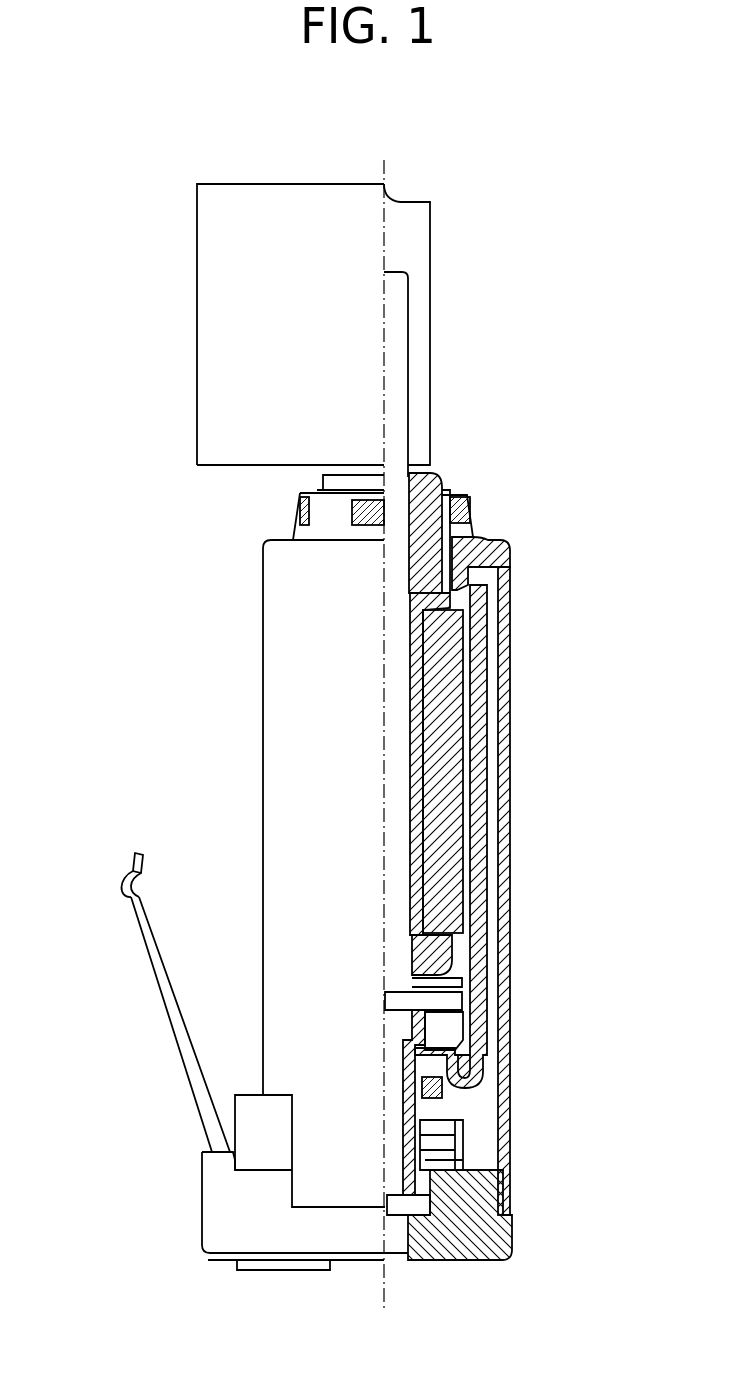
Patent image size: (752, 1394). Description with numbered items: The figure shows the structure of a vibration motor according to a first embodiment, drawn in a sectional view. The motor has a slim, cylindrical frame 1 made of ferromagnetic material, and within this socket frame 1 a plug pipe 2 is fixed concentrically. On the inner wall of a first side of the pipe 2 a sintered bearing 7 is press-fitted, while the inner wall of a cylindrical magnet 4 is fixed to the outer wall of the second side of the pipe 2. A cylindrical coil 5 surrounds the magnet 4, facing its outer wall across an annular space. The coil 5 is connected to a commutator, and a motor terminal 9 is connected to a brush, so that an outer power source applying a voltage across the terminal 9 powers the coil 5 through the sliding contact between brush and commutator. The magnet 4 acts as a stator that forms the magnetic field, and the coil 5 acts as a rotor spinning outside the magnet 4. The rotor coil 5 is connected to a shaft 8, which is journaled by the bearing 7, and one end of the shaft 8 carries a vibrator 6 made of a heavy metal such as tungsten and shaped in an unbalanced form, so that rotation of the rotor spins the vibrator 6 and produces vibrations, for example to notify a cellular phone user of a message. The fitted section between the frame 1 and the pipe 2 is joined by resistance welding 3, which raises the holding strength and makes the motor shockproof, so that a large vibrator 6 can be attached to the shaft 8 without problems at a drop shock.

The frame 1 is at (505, 590).
The plug pipe 2 is at (470, 535).
The resistance welding 3 is at (445, 507).
The magnet 4 is at (442, 718).
The coil 5 is at (477, 833).
The vibrator 6 is at (265, 270).
The sintered bearing 7 is at (432, 487).
The shaft 8 is at (395, 335).
The motor terminal 9 is at (160, 1000).